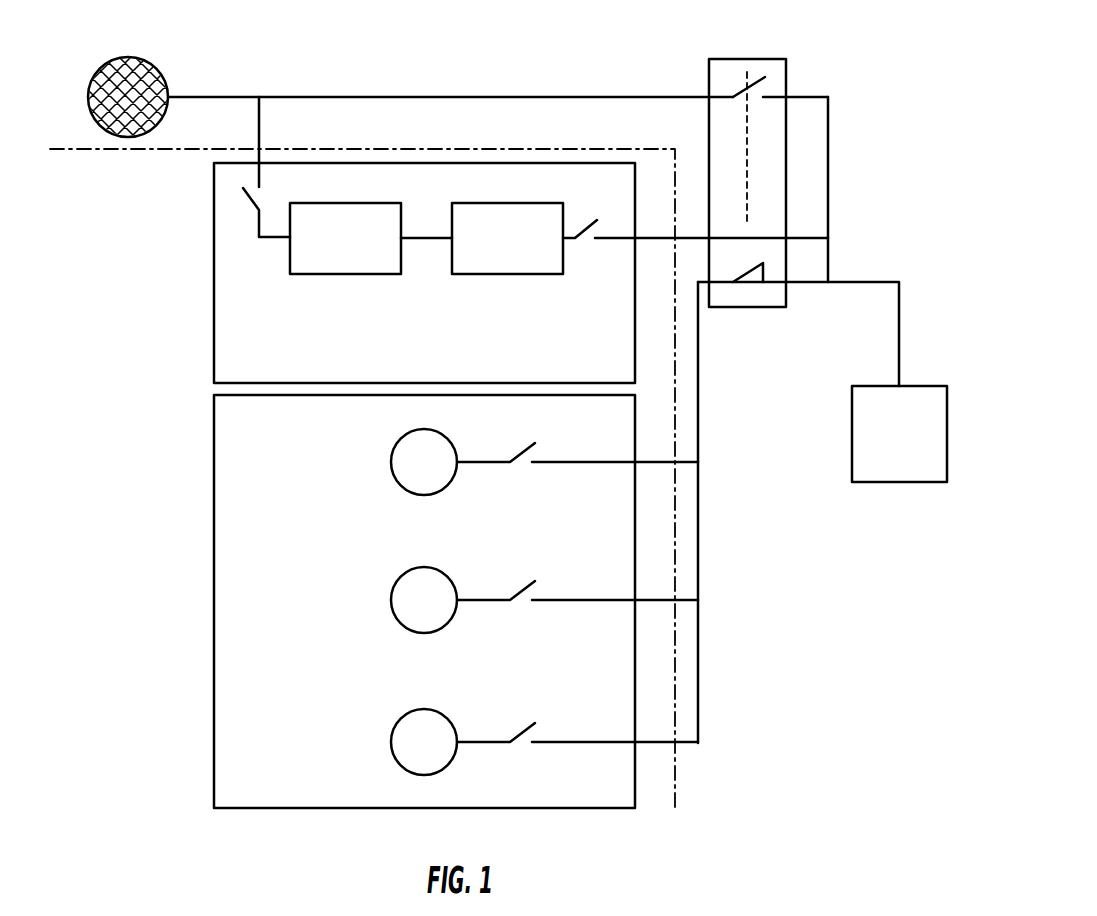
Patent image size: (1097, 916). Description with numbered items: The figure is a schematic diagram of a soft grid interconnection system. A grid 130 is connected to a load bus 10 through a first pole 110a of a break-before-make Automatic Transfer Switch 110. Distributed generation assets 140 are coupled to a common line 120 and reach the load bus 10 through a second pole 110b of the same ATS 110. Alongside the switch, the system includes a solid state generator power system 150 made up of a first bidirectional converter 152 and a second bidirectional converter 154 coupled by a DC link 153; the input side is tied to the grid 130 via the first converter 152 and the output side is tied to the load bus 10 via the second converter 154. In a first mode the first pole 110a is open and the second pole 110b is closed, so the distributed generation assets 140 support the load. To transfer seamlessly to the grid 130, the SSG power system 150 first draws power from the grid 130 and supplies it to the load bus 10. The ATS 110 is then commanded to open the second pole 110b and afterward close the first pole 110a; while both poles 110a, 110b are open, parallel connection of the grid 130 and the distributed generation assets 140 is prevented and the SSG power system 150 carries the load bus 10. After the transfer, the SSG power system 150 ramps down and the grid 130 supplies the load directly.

The load bus 10 is at (857, 262).
The break-before-make Automatic Transfer Switch 110 is at (735, 182).
The first pole 110a is at (735, 110).
The second pole 110b is at (748, 285).
The common line 120 is at (506, 545).
The grid 130 is at (190, 96).
The distributed generation assets 140 is at (391, 741).
The solid state generator power system 150 is at (473, 273).
The first bidirectional converter 152 is at (345, 275).
The DC link 153 is at (425, 240).
The second bidirectional converter 154 is at (507, 275).